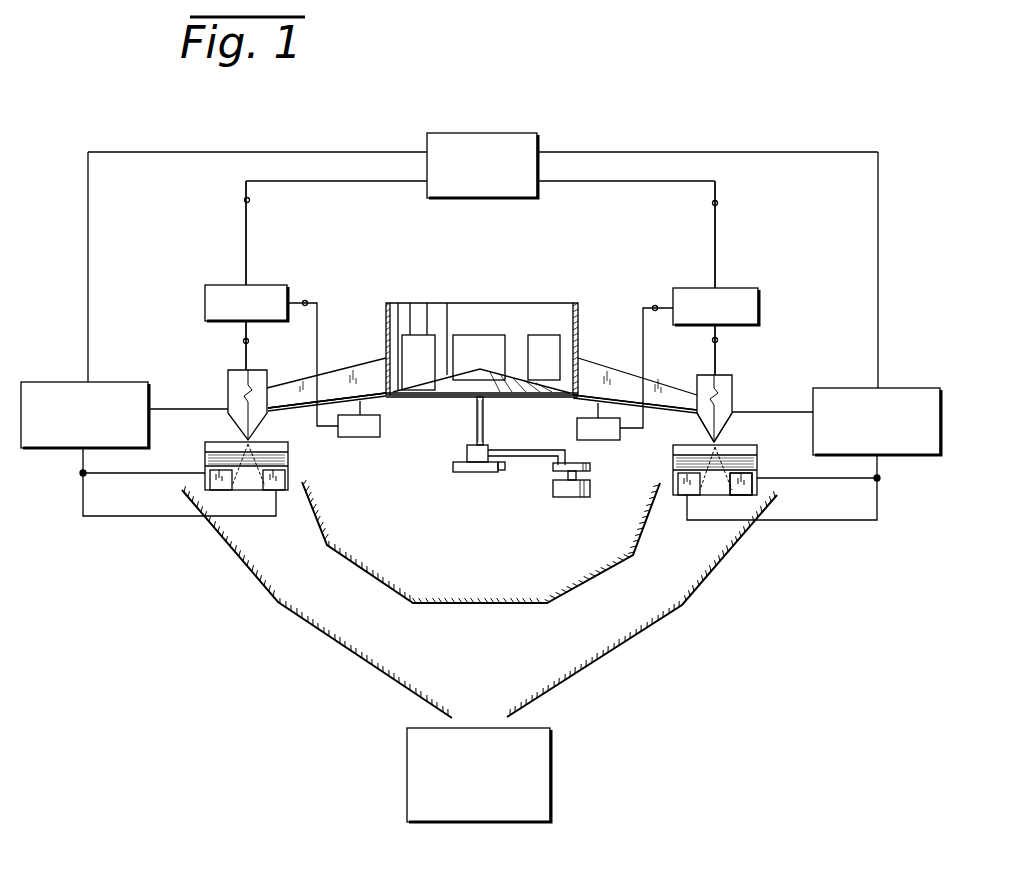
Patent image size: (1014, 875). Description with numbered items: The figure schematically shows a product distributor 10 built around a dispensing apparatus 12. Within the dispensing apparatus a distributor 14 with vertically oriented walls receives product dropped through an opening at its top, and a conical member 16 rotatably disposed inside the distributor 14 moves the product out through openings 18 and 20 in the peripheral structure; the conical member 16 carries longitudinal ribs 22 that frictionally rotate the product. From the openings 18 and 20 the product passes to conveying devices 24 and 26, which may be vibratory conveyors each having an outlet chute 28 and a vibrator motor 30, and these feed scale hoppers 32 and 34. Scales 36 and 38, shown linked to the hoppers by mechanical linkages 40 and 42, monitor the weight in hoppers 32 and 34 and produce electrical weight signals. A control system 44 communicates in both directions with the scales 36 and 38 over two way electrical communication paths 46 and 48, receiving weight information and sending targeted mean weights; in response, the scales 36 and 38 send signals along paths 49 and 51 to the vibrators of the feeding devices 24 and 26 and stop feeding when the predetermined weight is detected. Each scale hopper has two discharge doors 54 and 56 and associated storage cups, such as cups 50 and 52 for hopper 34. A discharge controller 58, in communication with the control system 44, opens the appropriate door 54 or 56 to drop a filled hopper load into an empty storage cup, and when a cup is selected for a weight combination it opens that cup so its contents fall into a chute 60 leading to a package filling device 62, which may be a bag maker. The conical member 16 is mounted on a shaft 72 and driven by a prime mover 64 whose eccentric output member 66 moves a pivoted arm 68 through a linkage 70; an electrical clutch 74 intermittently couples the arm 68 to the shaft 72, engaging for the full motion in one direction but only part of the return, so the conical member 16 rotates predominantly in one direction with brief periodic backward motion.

The product distributor 10 is at (688, 127).
The dispensing apparatus 12 is at (482, 312).
The distributor 14 is at (440, 303).
The conical member 16 is at (420, 385).
The opening 18 is at (386, 367).
The opening 20 is at (578, 375).
The longitudinal ribs 22 is at (510, 380).
The conveying device 24 is at (392, 402).
The conveying device 26 is at (575, 398).
The outlet chute 28 is at (302, 408).
The vibrator motor 30 is at (577, 430).
The scale hopper 32 is at (233, 383).
The scale hopper 34 is at (722, 388).
The scale 36 is at (205, 285).
The scale 38 is at (750, 292).
The mechanical linkage 40 is at (249, 341).
The mechanical linkage 42 is at (718, 340).
The control system 44 is at (520, 133).
The two way electrical communication path 46 is at (244, 200).
The two way electrical communication path 48 is at (718, 203).
The signal path 49 is at (306, 303).
The storage cup 50 is at (684, 478).
The signal path 51 is at (652, 305).
The storage cup 52 is at (740, 480).
The discharge door 54 is at (697, 430).
The discharge door 56 is at (732, 430).
The discharge controller 58 is at (905, 397).
The chute 60 is at (628, 640).
The package filling device 62 is at (538, 780).
The prime mover 64 is at (565, 488).
The eccentric output member 66 is at (590, 467).
The pivoted arm 68 is at (462, 465).
The linkage 70 is at (520, 458).
The shaft 72 is at (477, 410).
The electrical clutch 74 is at (467, 450).